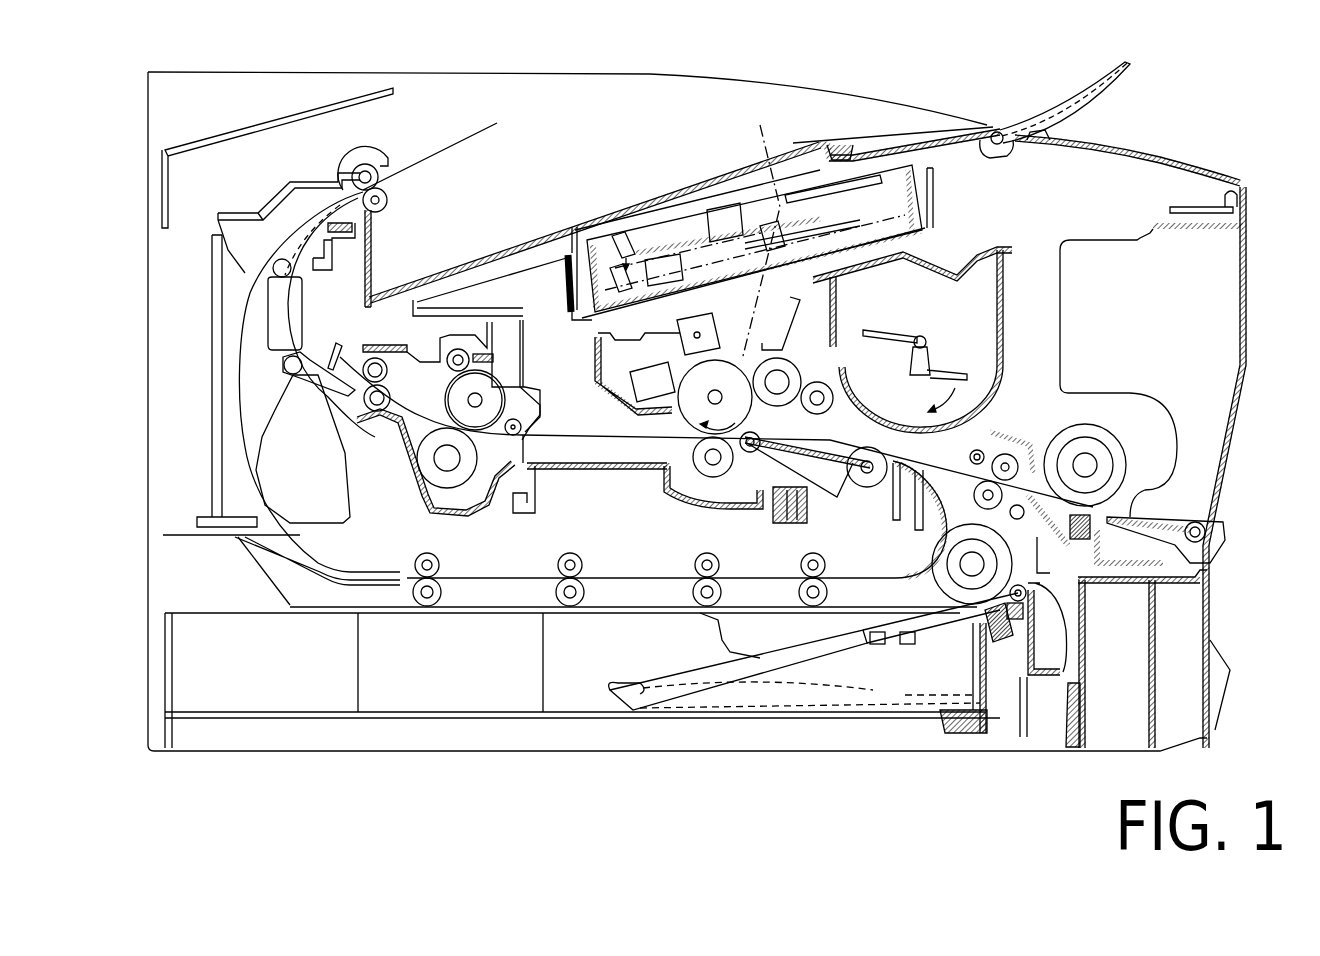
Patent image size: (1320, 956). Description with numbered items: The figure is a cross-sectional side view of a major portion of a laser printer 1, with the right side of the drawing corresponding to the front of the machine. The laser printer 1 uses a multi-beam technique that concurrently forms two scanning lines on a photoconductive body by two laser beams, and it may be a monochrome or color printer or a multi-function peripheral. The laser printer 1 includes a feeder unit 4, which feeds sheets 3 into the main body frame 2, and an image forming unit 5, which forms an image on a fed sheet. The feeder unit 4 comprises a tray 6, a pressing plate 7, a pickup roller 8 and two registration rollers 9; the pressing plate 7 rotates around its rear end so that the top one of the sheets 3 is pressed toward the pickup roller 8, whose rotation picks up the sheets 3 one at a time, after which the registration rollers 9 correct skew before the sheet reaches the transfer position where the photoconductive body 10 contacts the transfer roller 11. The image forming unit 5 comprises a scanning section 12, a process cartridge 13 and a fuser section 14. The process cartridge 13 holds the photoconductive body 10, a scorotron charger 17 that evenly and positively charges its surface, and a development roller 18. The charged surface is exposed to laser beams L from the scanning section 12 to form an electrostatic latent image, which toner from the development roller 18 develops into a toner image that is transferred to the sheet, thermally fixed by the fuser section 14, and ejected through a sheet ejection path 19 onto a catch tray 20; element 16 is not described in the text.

The laser printer 1 is at (710, 795).
The main body frame 2 is at (148, 437).
The sheets 3 is at (455, 147).
The feeder unit 4 is at (224, 604).
The image forming unit 5 is at (602, 486).
The tray 6 is at (163, 663).
The pressing plate 7 is at (770, 650).
The pickup roller 8 is at (925, 598).
The registration rollers 9 is at (850, 470).
The photoconductive body 10 is at (690, 428).
The transfer roller 11 is at (733, 510).
The scanning section 12 is at (707, 197).
The process cartridge 13 is at (967, 240).
The fuser section 14 is at (590, 416).
The top cover bracket 16 is at (877, 180).
The scorotron charger 17 is at (702, 366).
The development roller 18 is at (775, 350).
The sheet ejection path 19 is at (303, 308).
The catch tray 20 is at (516, 240).
The laser beams L is at (761, 229).